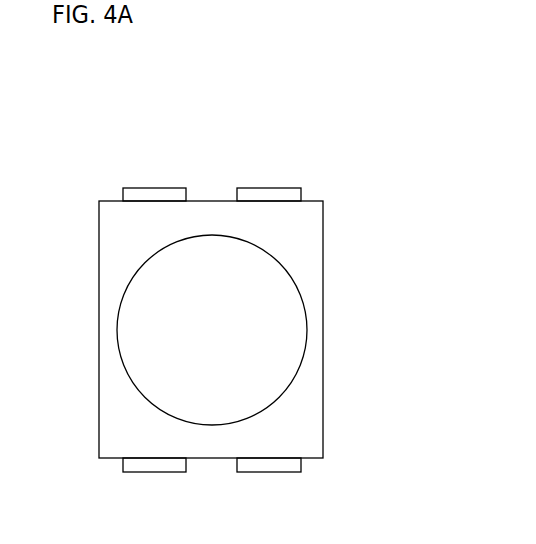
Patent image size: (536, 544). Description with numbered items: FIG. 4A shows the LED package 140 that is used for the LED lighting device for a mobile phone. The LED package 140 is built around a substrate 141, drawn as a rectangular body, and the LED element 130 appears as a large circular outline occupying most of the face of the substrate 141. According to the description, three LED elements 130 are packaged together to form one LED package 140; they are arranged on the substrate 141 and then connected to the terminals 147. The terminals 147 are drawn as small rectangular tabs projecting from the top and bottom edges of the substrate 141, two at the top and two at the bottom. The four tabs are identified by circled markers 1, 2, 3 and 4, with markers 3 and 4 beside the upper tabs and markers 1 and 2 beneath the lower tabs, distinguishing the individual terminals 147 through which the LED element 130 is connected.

The LED package 140 is at (102, 83).
The substrate 141 is at (323, 230).
The LED element 130 is at (305, 327).
The terminal 147 is at (182, 188).
The first terminal 1 is at (154, 484).
The second terminal 2 is at (269, 484).
The third terminal 3 is at (174, 162).
The fourth terminal 4 is at (269, 176).